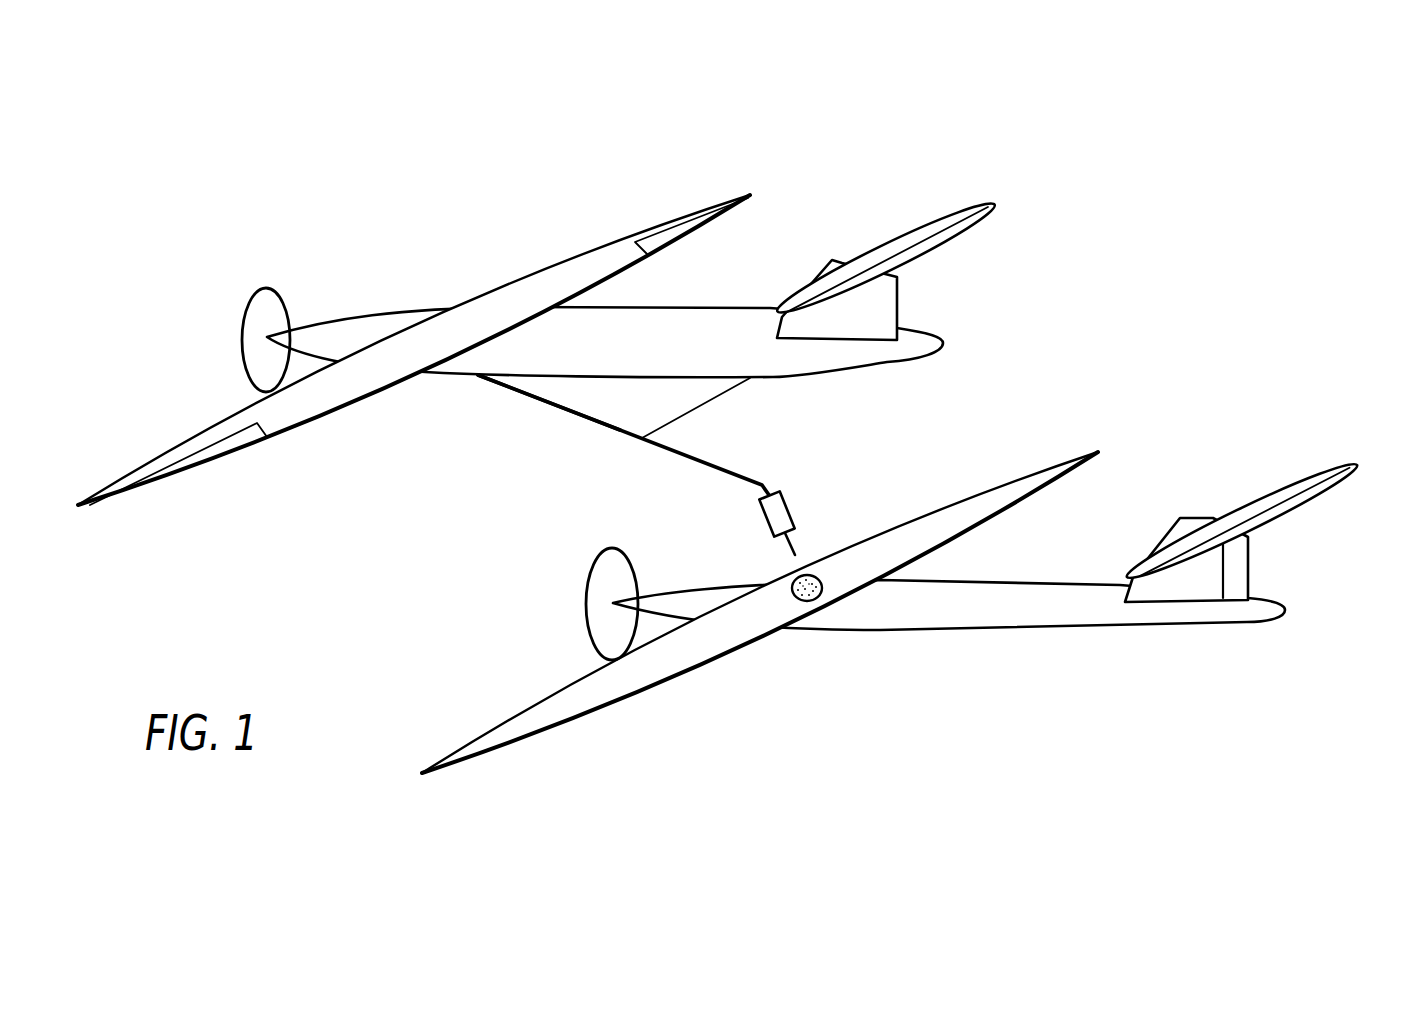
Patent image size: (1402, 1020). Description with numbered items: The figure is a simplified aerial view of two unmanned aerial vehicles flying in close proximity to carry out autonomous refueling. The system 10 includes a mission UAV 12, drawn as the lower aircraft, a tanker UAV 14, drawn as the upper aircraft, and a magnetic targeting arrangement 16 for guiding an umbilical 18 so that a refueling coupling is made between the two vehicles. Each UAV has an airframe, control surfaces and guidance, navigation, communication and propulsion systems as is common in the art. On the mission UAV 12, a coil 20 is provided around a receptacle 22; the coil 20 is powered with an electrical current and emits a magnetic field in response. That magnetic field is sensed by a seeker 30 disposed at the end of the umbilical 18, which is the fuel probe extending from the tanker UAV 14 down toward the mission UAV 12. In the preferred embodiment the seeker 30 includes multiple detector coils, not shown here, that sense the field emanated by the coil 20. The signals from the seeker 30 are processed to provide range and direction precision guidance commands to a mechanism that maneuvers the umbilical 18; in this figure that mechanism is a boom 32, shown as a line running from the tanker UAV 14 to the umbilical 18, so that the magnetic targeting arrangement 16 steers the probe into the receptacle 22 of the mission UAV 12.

The system 10 is at (1078, 380).
The mission UAV 12 is at (1282, 582).
The tanker UAV 14 is at (205, 317).
The magnetic targeting arrangement 16 is at (536, 433).
The umbilical 18 is at (690, 457).
The coil 20 is at (815, 596).
The receptacle 22 is at (807, 588).
The seeker 30 is at (770, 514).
The boom 32 is at (727, 387).